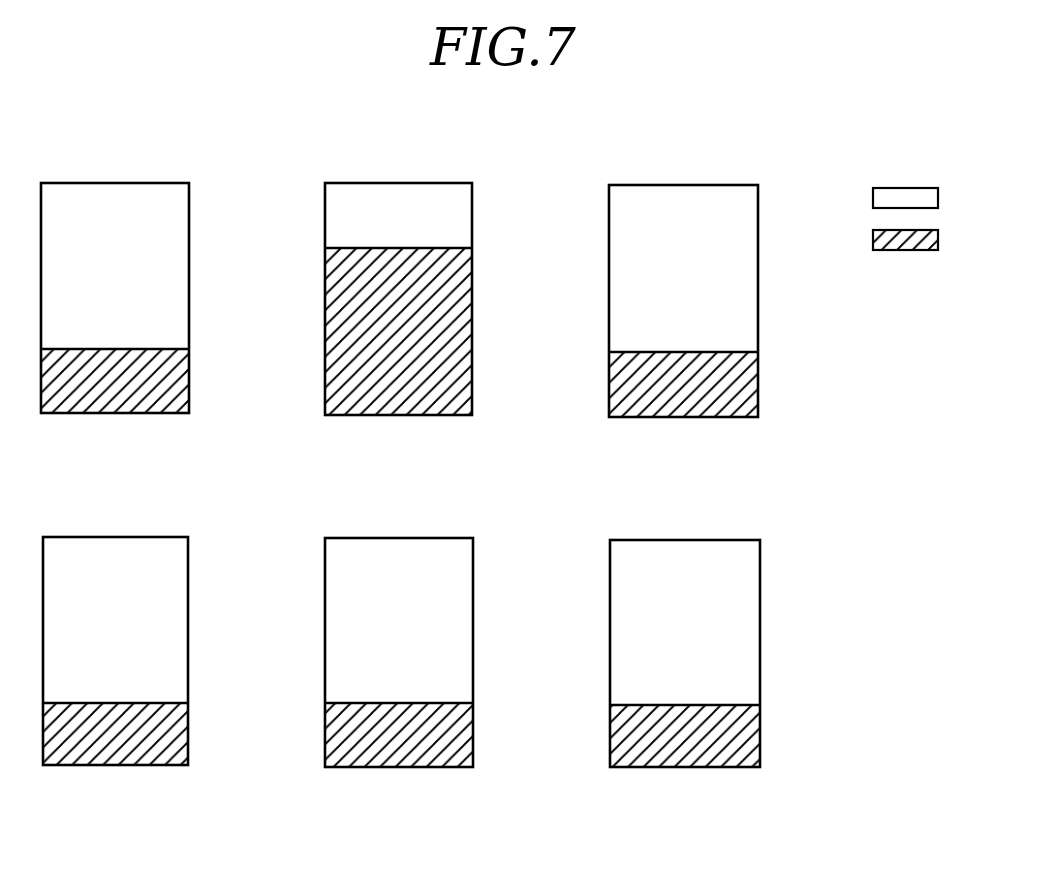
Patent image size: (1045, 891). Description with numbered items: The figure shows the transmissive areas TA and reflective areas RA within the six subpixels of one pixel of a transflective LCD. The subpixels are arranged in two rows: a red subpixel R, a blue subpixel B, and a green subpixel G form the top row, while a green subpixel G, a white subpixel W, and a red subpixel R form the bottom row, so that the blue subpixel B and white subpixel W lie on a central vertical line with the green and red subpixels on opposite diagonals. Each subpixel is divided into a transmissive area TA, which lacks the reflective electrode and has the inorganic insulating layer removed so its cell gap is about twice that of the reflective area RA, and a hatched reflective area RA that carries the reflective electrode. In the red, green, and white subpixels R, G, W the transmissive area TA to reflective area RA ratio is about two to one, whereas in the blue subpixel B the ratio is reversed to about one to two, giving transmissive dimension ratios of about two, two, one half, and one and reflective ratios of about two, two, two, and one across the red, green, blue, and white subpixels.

The transmissive area TA is at (885, 199).
The reflective area RA is at (885, 241).
The red subpixel R is at (400, 475).
The green subpixel G is at (400, 475).
The blue subpixel B is at (398, 299).
The white subpixel W is at (399, 652).